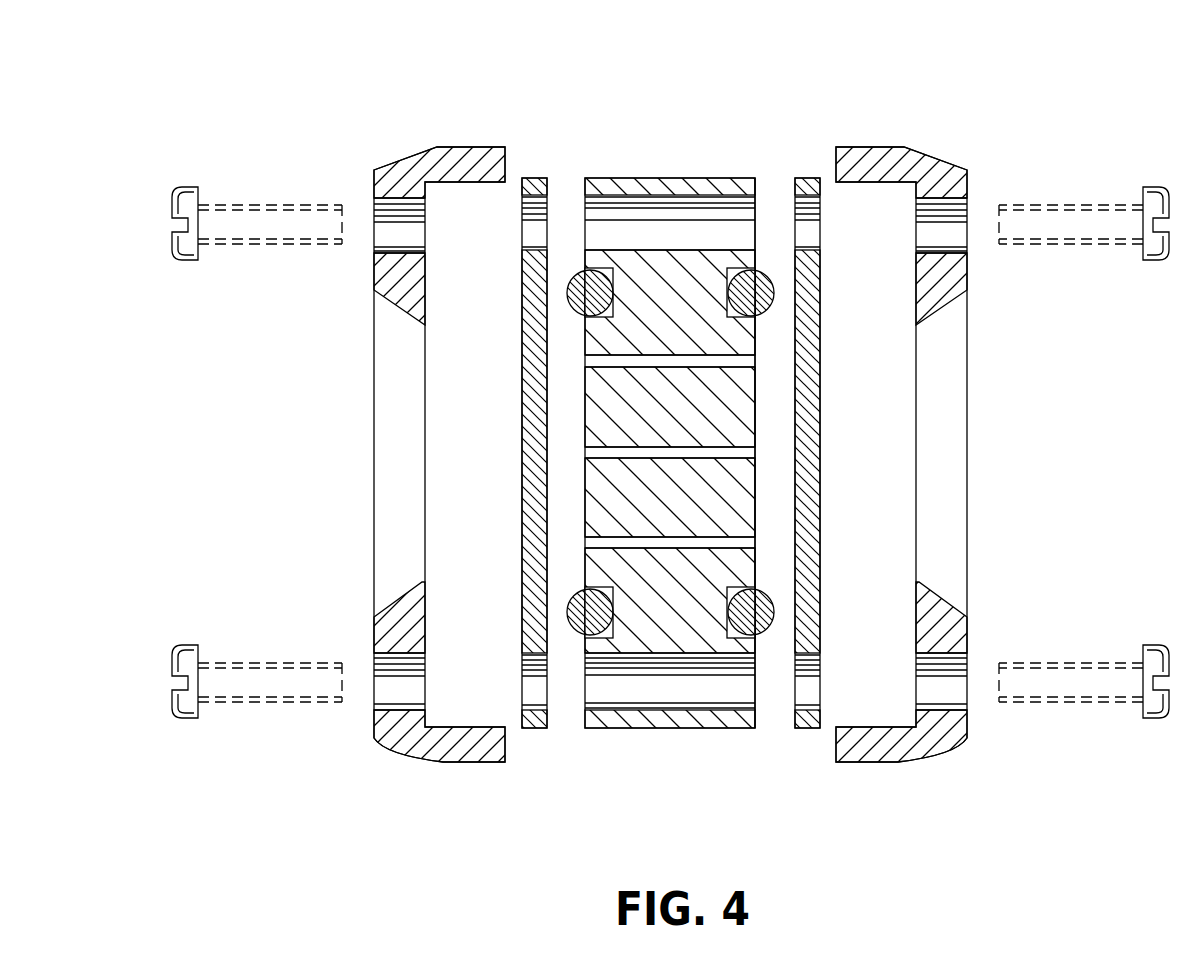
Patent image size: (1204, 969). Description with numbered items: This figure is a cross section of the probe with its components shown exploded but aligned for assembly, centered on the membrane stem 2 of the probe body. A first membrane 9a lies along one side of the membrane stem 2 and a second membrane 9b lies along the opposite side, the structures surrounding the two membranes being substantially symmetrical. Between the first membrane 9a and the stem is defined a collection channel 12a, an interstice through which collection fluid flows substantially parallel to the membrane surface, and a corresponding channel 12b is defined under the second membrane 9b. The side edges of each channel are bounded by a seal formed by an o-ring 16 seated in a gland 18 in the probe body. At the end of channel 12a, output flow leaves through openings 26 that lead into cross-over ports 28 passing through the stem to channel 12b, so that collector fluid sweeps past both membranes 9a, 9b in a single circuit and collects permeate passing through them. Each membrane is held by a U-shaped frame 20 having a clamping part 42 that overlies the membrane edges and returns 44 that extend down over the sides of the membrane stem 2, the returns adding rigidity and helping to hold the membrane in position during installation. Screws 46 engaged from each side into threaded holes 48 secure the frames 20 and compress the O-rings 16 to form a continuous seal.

The membrane stem 2 is at (656, 750).
The first membrane 9a is at (530, 730).
The second membrane 9b is at (808, 730).
The collection channel 12a is at (655, 417).
The channel 12b is at (778, 410).
The o-ring 16 is at (578, 272).
The gland 18 is at (615, 275).
The frame 20 is at (621, 443).
The openings 26 is at (588, 452).
The cross-over ports 28 is at (667, 545).
The clamping part 42 is at (374, 278).
The returns 44 is at (455, 148).
The screws 46 is at (258, 205).
The threaded holes 48 is at (717, 215).